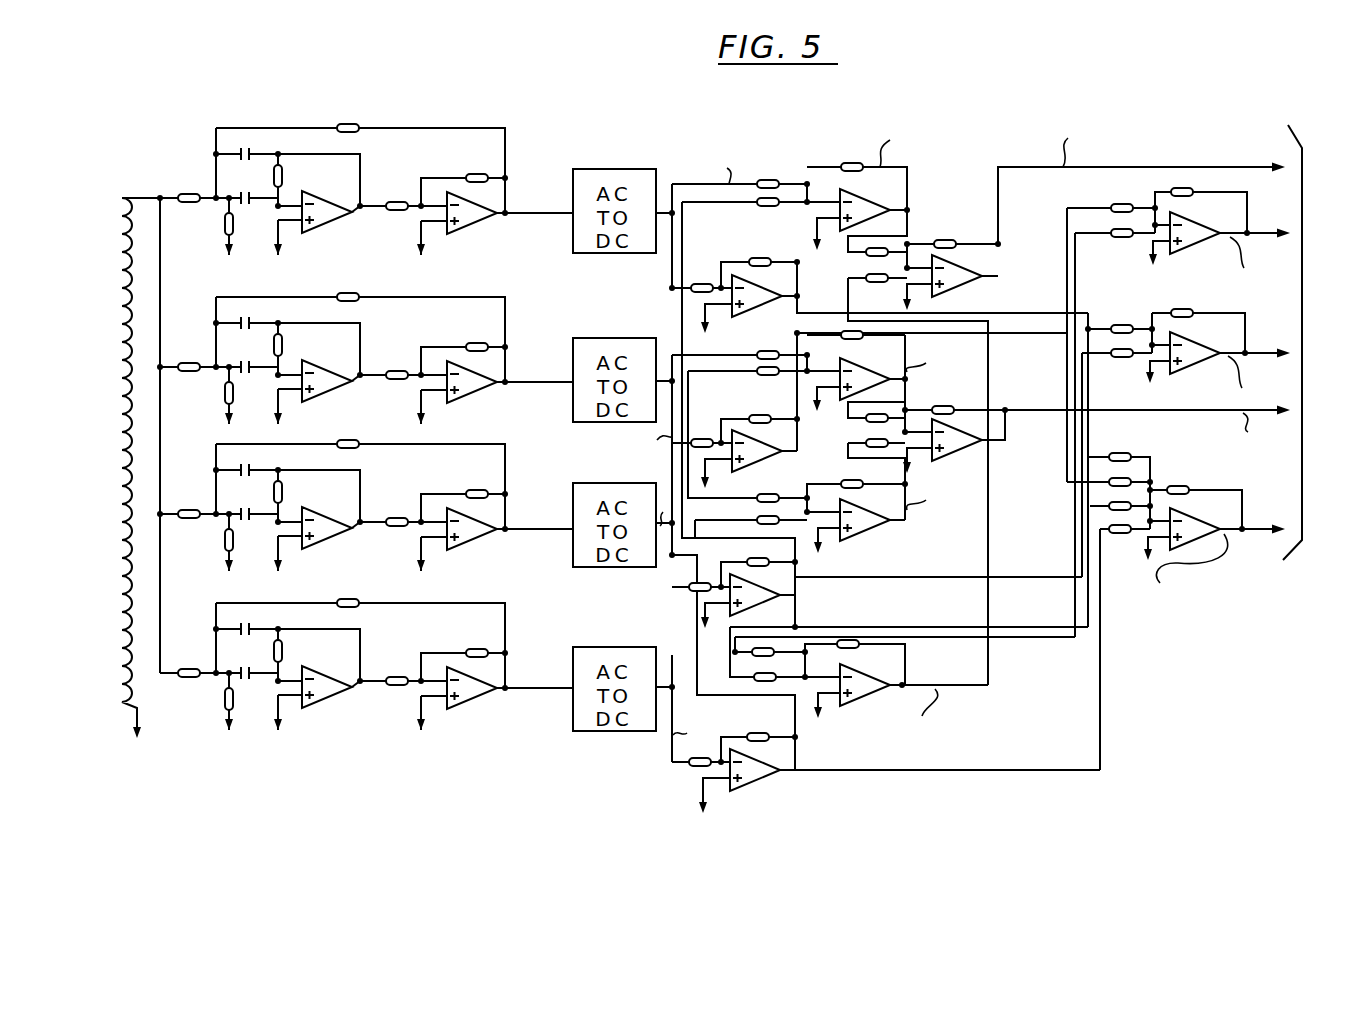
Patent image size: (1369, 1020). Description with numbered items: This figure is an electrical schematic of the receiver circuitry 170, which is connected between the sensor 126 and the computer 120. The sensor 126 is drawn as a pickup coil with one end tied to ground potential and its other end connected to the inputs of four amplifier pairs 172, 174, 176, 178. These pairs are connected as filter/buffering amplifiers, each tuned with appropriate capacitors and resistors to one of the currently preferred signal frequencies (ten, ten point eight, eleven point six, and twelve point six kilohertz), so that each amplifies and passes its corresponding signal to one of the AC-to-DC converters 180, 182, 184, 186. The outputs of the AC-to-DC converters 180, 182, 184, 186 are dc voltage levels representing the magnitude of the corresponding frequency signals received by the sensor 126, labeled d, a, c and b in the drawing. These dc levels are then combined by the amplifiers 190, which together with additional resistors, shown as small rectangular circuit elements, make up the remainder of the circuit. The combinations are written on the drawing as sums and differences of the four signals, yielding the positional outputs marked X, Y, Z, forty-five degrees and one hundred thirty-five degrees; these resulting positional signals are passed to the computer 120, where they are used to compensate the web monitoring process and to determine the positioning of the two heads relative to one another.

The sensor 126 is at (121, 208).
The amplifier pair 172 is at (419, 150).
The amplifier pair 174 is at (390, 340).
The amplifier pair 176 is at (391, 480).
The amplifier pair 178 is at (391, 634).
The AC-to-DC converter 180 is at (615, 169).
The AC-to-DC converter 182 is at (608, 338).
The AC-to-DC converter 184 is at (626, 446).
The AC-to-DC converter 186 is at (595, 647).
The receiver circuitry 170 is at (1046, 82).
The amplifiers 190 is at (1137, 762).
The computer 120 is at (1307, 342).